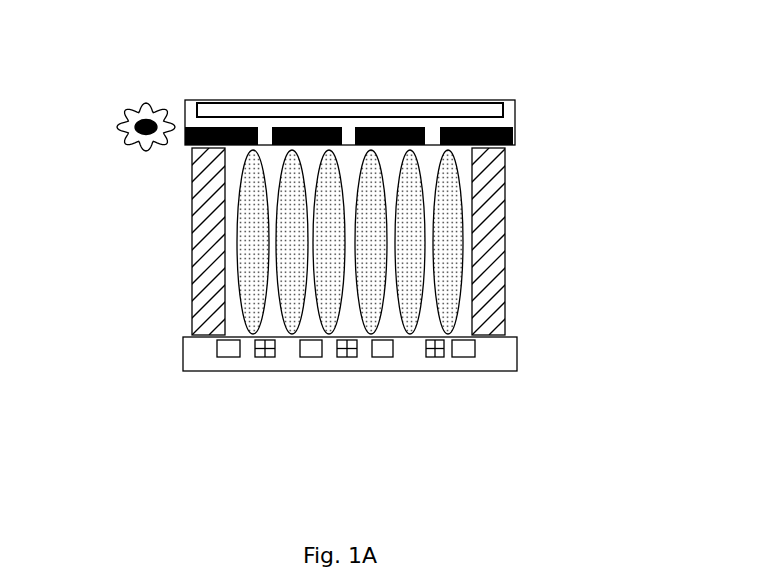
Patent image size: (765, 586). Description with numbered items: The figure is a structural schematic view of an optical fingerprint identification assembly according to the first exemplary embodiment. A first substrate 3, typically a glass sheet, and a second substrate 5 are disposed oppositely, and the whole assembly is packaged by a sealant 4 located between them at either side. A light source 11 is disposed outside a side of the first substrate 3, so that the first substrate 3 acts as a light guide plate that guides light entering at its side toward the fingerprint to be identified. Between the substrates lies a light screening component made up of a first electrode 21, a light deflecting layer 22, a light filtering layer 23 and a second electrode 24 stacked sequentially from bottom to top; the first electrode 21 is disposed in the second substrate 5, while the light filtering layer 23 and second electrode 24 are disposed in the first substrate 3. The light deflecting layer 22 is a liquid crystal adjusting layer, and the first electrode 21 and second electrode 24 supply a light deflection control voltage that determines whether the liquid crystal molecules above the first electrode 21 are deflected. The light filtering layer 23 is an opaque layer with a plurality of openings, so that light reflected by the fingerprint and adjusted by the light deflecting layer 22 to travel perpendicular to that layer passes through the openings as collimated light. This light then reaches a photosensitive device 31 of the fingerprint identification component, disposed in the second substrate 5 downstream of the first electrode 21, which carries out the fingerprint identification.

The light source 11 is at (133, 128).
The second electrode 24 is at (293, 108).
The light filtering layer 23 is at (382, 125).
The first substrate 3 is at (502, 118).
The light deflecting layer 22 is at (403, 218).
The sealant 4 is at (482, 263).
The second substrate 5 is at (492, 363).
The first electrode 21 is at (313, 348).
The photosensitive device 31 is at (435, 353).